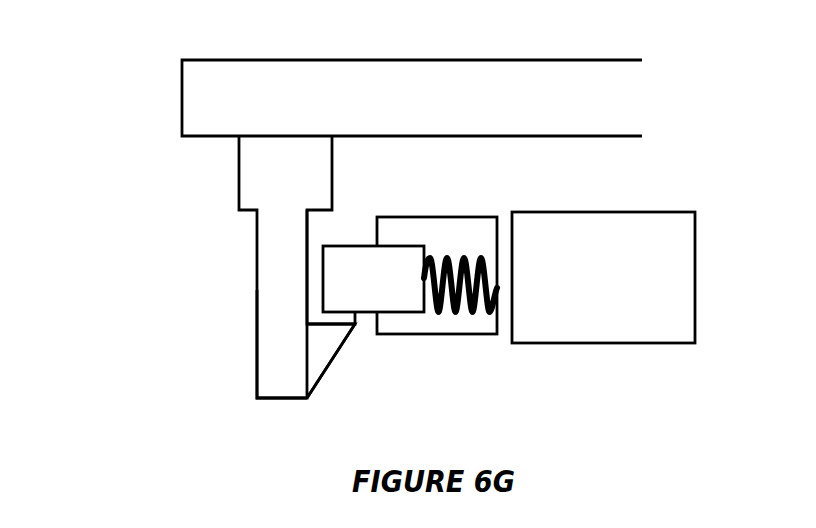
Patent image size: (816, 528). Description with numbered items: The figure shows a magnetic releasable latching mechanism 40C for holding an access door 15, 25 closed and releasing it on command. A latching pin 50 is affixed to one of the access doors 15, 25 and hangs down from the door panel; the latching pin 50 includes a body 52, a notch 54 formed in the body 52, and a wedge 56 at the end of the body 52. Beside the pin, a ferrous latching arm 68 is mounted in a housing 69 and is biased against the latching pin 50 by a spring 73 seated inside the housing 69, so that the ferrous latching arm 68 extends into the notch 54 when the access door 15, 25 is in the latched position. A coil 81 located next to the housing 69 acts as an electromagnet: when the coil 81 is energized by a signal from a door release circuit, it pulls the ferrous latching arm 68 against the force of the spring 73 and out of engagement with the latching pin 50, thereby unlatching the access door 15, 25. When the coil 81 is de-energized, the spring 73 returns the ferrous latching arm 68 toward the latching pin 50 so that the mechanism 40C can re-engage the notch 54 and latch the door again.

The access door 15 is at (412, 75).
The access door 25 is at (456, 66).
The releasable latching mechanism 40C is at (224, 267).
The latching pin 50 is at (257, 246).
The body 52 is at (257, 296).
The notch 54 is at (325, 223).
The wedge 56 is at (333, 362).
The ferrous latching arm 68 is at (396, 305).
The housing 69 is at (460, 240).
The spring 73 is at (485, 262).
The coil 81 is at (606, 323).